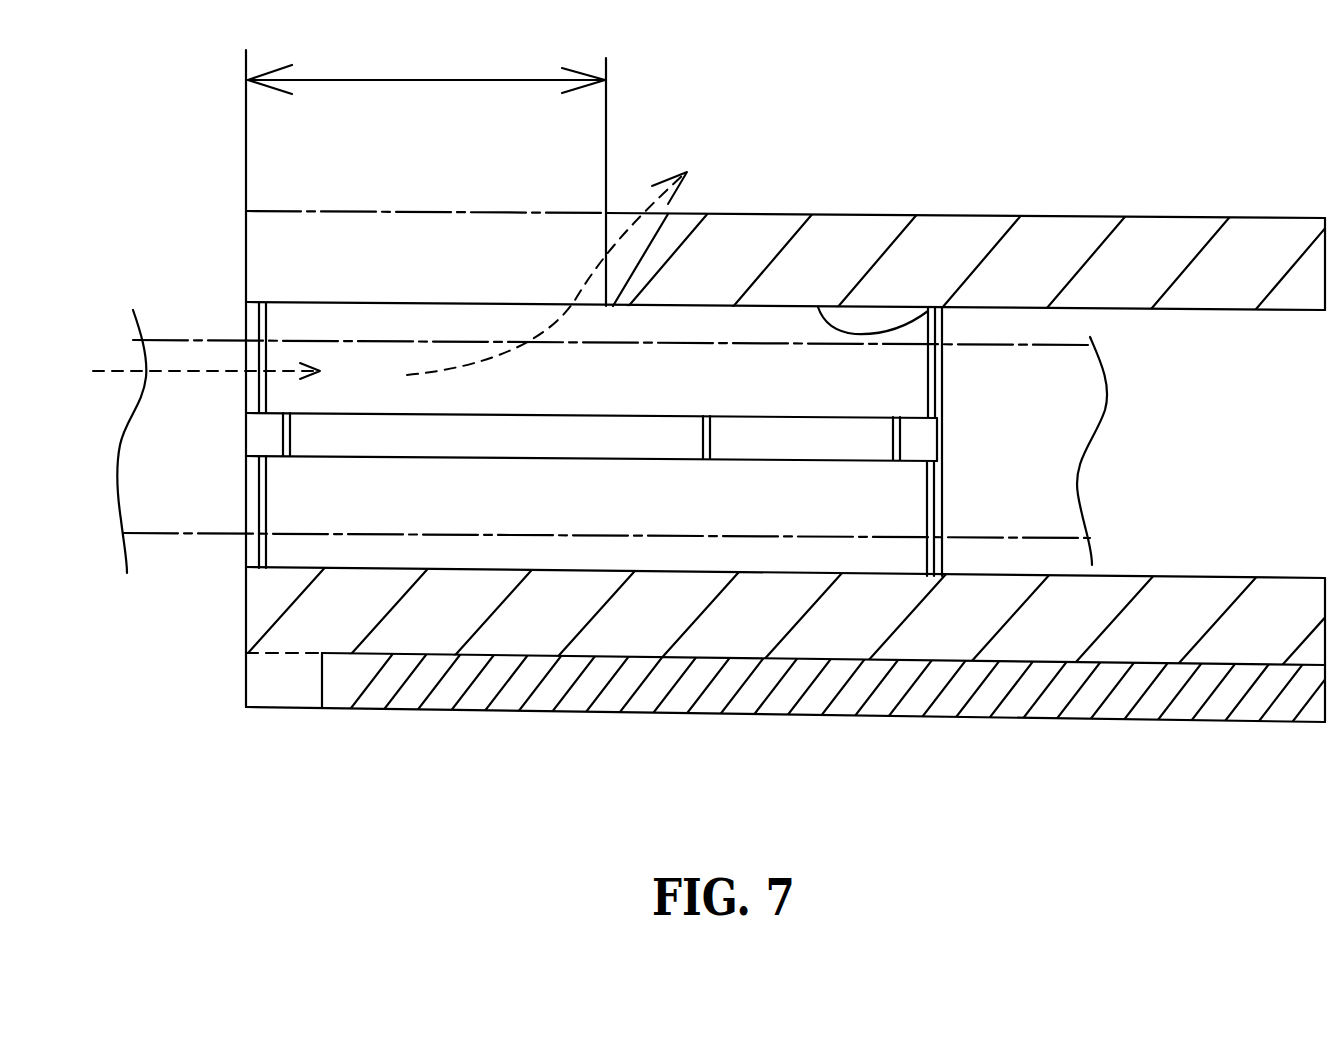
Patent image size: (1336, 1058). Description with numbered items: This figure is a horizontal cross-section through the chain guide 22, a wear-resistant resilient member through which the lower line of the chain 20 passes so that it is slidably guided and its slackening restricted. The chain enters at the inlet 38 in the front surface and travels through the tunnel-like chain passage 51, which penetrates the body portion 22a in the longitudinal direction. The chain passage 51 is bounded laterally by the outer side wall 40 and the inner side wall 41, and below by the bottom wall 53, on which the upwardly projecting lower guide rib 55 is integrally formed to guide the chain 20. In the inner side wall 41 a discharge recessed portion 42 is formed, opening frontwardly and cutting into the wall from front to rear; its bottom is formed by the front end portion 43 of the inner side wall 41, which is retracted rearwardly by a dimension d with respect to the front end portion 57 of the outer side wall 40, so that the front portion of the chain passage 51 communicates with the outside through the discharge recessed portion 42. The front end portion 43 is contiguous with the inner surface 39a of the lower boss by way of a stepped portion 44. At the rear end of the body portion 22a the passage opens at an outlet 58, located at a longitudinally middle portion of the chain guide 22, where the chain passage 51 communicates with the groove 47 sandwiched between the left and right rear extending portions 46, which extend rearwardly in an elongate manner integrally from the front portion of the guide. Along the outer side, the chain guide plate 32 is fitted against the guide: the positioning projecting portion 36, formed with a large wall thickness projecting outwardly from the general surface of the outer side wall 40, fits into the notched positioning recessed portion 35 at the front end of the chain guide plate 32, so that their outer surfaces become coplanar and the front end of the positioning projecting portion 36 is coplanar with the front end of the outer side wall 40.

The chain 20 is at (1088, 373).
The chain guide 22 is at (943, 157).
The body portion 22a is at (863, 222).
The chain guide plate 32 is at (700, 700).
The positioning recessed portion 35 is at (322, 670).
The positioning projecting portion 36 is at (257, 695).
The inlet 38 is at (223, 493).
The inner surface 39a is at (327, 300).
The outer side wall 40 is at (457, 632).
The inner side wall 41 is at (815, 237).
The discharge recessed portion 42 is at (547, 268).
The front end portion 43 is at (633, 282).
The stepped portion 44 is at (633, 280).
The rear extending portion 46 is at (1205, 218).
The groove 47 is at (1259, 456).
The chain passage 51 is at (930, 306).
The bottom wall 53 is at (283, 352).
The lower guide rib 55 is at (270, 435).
The front end portion 57 is at (243, 602).
The outlet 58 is at (942, 433).
The dimension d is at (427, 170).